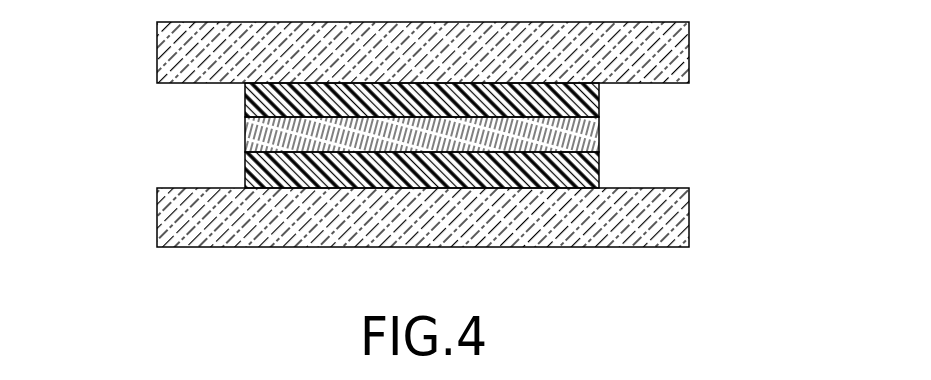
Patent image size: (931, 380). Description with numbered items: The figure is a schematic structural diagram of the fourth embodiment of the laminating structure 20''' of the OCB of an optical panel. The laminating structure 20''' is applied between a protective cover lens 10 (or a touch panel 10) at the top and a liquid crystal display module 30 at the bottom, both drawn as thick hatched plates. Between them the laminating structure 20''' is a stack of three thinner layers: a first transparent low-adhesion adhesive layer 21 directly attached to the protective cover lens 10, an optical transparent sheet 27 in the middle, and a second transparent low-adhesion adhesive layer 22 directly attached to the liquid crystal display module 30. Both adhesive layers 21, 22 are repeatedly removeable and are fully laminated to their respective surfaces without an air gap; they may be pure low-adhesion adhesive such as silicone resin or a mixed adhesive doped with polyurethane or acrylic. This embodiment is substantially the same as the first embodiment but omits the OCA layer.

The protective cover lens 10 is at (688, 47).
The laminating structure 20''' is at (322, 129).
The first transparent low-adhesion adhesive layer 21 is at (600, 93).
The optical transparent sheet 27 is at (590, 135).
The second transparent low-adhesion adhesive layer 22 is at (590, 163).
The liquid crystal display module 30 is at (677, 218).